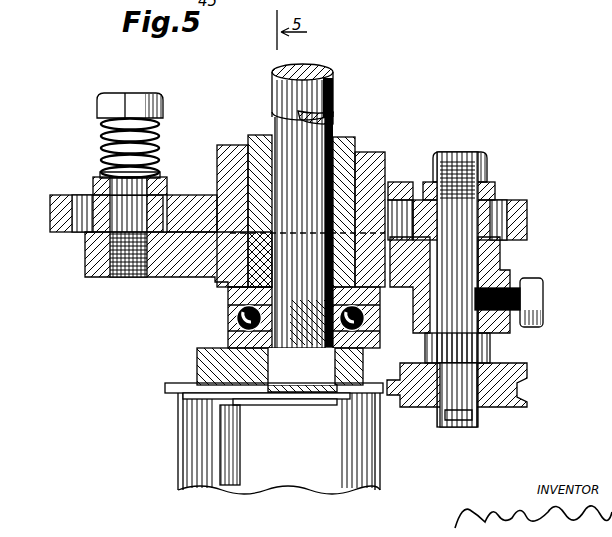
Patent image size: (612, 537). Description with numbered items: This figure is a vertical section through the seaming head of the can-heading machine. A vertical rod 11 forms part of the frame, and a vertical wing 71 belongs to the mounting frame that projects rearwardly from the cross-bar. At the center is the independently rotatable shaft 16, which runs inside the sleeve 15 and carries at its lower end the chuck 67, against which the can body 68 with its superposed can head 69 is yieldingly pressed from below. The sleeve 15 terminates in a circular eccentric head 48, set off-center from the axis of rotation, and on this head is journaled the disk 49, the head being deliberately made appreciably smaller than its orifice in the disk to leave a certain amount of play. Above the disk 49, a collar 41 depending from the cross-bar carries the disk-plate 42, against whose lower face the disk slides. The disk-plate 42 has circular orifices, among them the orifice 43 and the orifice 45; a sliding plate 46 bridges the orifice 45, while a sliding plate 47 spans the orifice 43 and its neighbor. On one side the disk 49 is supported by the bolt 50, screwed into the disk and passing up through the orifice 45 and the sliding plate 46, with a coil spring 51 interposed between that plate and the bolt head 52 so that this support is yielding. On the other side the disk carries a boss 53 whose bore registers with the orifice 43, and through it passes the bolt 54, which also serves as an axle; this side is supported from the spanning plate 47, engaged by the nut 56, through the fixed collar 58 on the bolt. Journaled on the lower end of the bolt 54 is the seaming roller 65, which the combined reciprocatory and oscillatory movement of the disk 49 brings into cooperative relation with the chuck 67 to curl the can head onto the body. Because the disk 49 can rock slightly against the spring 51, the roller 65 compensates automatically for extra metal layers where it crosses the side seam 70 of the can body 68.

The vertical rod 11 is at (335, 85).
The sleeve 15 is at (372, 155).
The shaft 16 is at (302, 140).
The collar 41 is at (218, 181).
The disk-plate 42 is at (530, 220).
The orifice 43 is at (399, 222).
The orifice 45 is at (75, 232).
The sliding plate 46 is at (152, 180).
The sliding plate 47 is at (497, 192).
The eccentric head 48 is at (248, 265).
The disk 49 is at (170, 268).
The bolt 50 is at (123, 190).
The coil spring 51 is at (160, 135).
The bolt head 52 is at (163, 108).
The boss 53 is at (500, 255).
The bolt 54 is at (440, 292).
The nut 56 is at (478, 154).
The fixed collar 58 is at (490, 350).
The seaming roller 65 is at (518, 394).
The chuck 67 is at (198, 352).
The can body 68 is at (380, 455).
The can head 69 is at (272, 406).
The side seam 70 is at (240, 456).
The vertical wing 71 is at (440, 182).